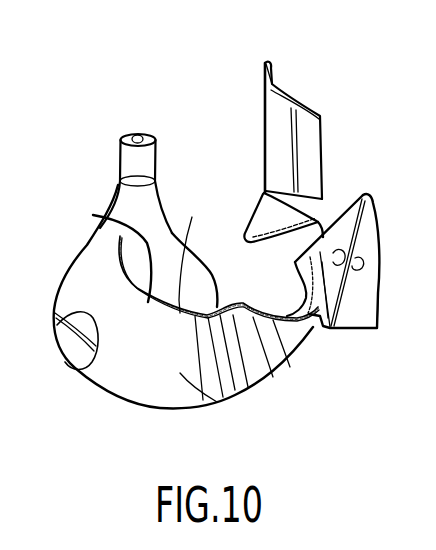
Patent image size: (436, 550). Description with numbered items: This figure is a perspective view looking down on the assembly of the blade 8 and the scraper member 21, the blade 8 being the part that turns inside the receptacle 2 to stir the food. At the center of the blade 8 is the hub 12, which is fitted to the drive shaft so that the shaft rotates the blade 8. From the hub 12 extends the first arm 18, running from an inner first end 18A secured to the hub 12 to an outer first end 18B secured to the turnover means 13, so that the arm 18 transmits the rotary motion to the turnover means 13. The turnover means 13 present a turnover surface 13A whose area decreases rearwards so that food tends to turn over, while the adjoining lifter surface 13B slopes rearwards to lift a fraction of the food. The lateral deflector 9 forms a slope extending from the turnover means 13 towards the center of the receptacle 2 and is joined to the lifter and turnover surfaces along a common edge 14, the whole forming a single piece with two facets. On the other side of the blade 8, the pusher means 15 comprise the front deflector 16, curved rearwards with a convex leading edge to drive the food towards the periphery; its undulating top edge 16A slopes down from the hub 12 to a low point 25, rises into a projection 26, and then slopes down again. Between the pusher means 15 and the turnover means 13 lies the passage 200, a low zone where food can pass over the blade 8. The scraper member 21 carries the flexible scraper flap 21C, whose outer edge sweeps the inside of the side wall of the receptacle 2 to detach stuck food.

The blade 8 is at (99, 156).
The hub 12 is at (160, 232).
The pusher means 15 is at (141, 371).
The front deflector 16 is at (214, 405).
The top edge of the front deflector 16A is at (112, 221).
The first arm 18 is at (228, 291).
The inner first end 18A is at (77, 365).
The outer first end 18B is at (378, 311).
The low point 25 is at (190, 251).
The projection 26 is at (234, 306).
The scraper member 21 is at (320, 105).
The scraper flap 21C is at (276, 78).
The passage 200 is at (297, 303).
The lateral deflector 9 is at (350, 218).
The turnover means 13 is at (374, 267).
The turnover surface 13A is at (364, 220).
The lifter surface 13B is at (348, 320).
The common edge 14 is at (356, 247).
The receptacle 2 is at (432, 189).